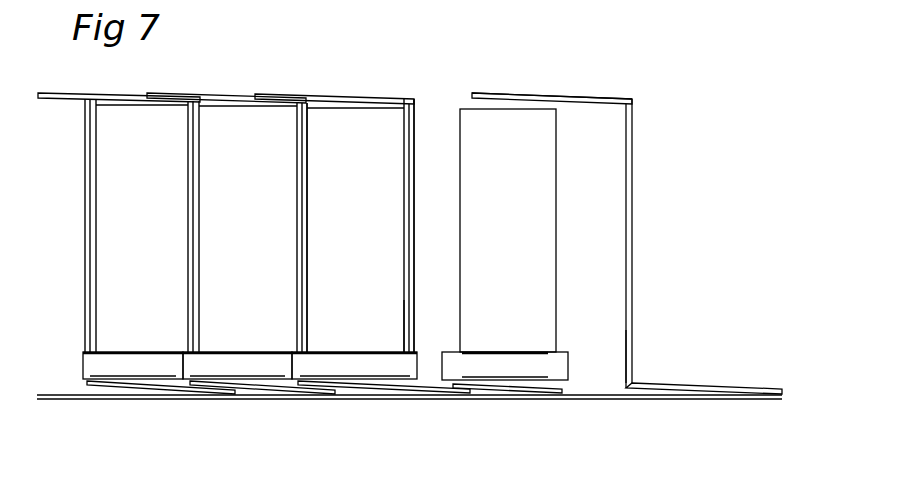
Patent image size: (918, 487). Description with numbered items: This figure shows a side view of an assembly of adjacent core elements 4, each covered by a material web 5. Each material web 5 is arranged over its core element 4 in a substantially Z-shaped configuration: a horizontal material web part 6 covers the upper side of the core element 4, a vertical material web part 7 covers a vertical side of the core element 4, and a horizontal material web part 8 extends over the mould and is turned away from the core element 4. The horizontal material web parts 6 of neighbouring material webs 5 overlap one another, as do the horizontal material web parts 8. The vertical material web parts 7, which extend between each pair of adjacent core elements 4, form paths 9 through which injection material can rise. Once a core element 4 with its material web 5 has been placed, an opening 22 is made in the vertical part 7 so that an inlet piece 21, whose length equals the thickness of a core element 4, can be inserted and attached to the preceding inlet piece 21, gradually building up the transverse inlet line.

The core element 4 is at (223, 208).
The material web 5 is at (194, 85).
The material web part 6 is at (506, 97).
The material web part 7 is at (633, 178).
The horizontal material web part 8 is at (731, 387).
The path 9 is at (308, 150).
The inlet piece 21 is at (331, 367).
The opening 22 is at (413, 350).